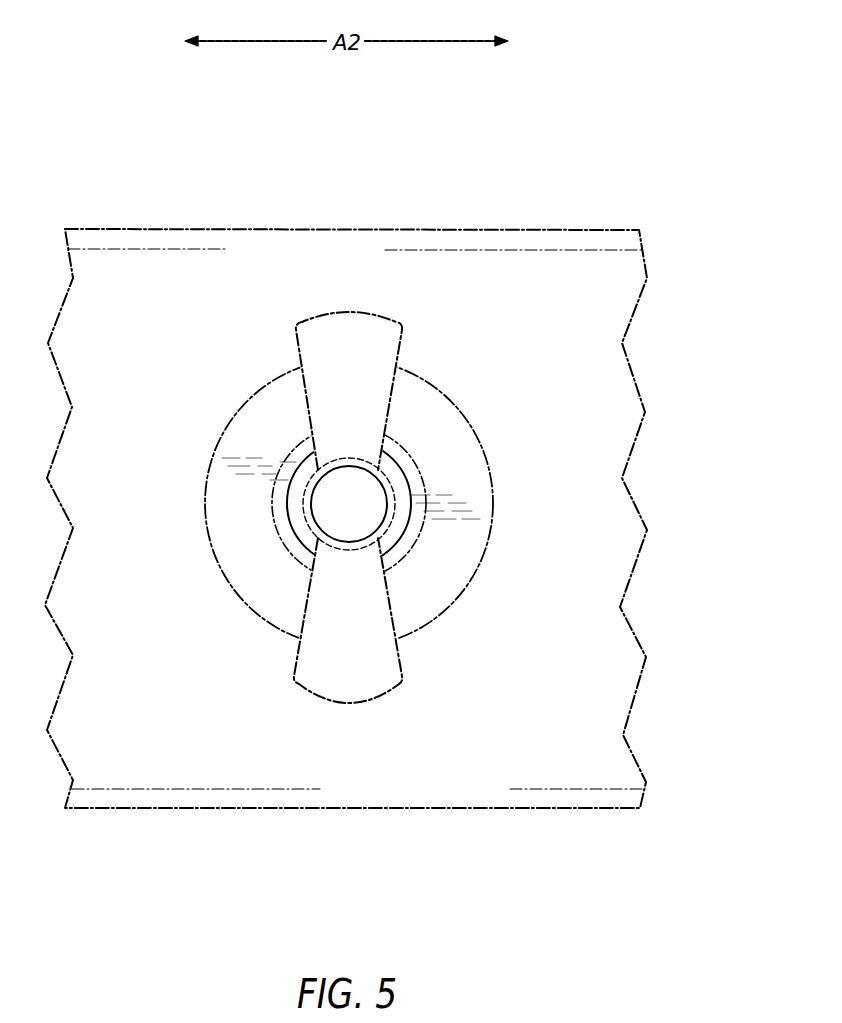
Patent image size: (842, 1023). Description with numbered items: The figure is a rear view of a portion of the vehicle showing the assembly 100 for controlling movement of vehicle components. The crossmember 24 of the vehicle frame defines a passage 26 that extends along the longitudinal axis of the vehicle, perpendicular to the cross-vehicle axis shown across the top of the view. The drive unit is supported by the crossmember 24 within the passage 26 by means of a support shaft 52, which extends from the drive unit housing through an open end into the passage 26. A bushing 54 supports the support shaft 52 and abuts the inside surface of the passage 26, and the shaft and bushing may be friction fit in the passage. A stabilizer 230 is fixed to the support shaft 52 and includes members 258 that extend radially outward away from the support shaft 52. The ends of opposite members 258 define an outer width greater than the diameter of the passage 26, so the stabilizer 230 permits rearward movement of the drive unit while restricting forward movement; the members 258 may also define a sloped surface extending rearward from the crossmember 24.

The crossmember 24 is at (186, 268).
The assembly for controlling movement of components of a vehicle 100 is at (495, 337).
The passage 26 is at (247, 400).
The bushing 54 is at (448, 438).
The support shaft 52 is at (392, 533).
The stabilizer 230 is at (289, 584).
The members 258 is at (345, 332).